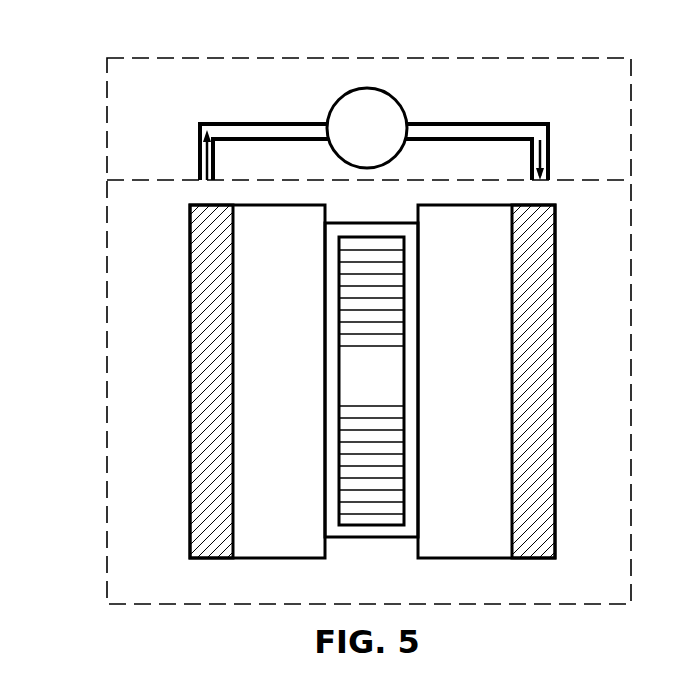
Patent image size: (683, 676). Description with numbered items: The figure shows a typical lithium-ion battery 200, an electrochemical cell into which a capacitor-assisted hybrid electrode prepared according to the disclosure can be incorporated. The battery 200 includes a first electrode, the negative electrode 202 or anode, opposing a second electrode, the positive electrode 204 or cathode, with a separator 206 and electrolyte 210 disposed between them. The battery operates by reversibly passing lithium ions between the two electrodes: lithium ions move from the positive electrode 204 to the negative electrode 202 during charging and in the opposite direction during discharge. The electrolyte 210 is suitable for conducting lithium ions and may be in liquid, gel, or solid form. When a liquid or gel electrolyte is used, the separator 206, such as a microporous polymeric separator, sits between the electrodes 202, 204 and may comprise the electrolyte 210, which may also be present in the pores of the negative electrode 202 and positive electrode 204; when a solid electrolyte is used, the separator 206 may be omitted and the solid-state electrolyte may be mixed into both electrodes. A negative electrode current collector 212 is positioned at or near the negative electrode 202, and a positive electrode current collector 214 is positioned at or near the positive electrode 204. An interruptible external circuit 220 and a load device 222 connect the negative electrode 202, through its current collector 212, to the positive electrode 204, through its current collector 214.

The lithium-ion battery 200 is at (84, 278).
The negative electrode 202 is at (448, 369).
The positive electrode 204 is at (265, 369).
The separator 206 is at (355, 387).
The electrolyte 210 is at (380, 540).
The negative electrode current collector 212 is at (557, 260).
The positive electrode current collector 214 is at (188, 268).
The interruptible external circuit 220 is at (160, 54).
The load device 222 is at (350, 141).